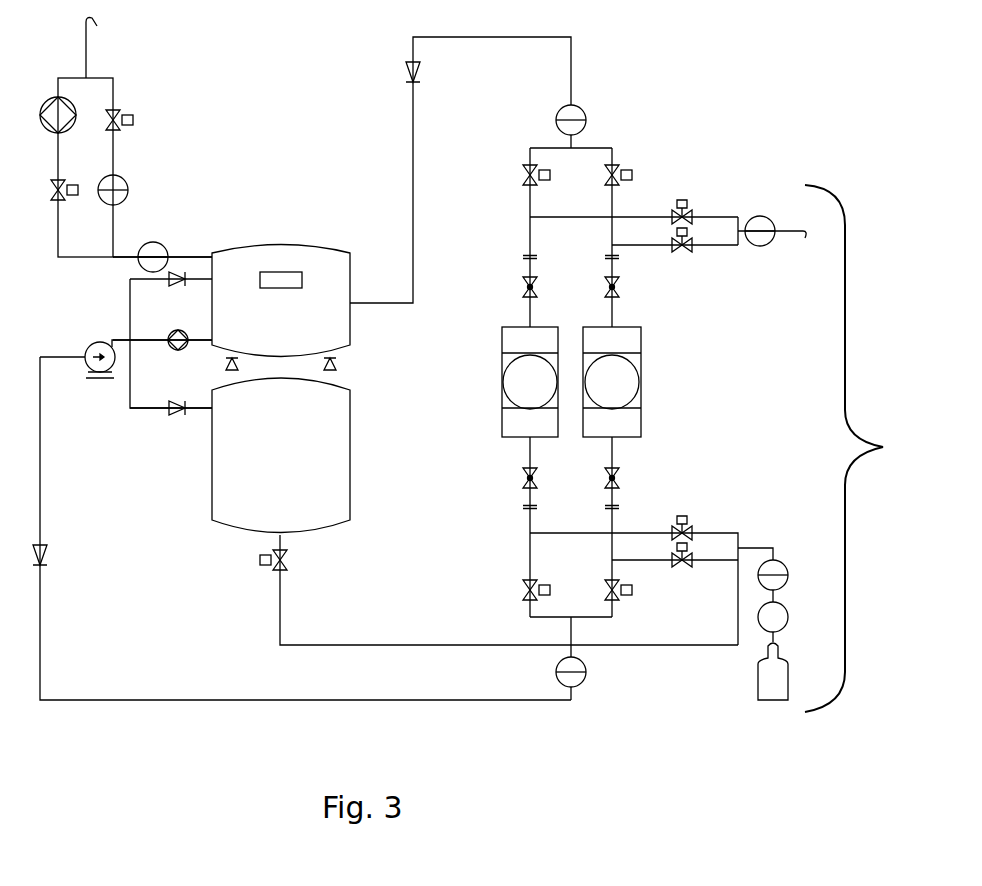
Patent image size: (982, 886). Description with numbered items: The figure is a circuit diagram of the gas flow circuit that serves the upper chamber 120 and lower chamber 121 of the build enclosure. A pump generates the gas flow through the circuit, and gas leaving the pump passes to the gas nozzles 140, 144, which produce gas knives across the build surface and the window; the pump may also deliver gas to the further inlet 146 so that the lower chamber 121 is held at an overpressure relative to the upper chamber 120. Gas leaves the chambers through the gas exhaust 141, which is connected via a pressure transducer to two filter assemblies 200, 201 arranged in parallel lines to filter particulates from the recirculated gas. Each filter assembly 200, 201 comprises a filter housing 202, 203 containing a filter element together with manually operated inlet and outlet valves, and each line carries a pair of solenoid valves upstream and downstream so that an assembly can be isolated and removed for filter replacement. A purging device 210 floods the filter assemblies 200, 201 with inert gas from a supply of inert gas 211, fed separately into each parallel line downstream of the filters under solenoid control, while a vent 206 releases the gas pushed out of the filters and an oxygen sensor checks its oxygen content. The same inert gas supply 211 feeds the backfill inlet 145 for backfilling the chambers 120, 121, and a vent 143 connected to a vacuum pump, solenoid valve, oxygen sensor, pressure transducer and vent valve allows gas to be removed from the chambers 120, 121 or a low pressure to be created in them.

The upper chamber 120 is at (281, 308).
The lower chamber 121 is at (281, 455).
The gas nozzle 140 is at (206, 331).
The gas exhaust 141 is at (349, 298).
The vent 143 is at (209, 256).
The gas nozzle 144 is at (268, 269).
The backfill inlet 145 is at (290, 538).
The further inlet 146 is at (206, 417).
The filter assembly 200 is at (483, 394).
The filter assembly 201 is at (666, 396).
The filter housing 202 is at (474, 382).
The filter housing 203 is at (668, 381).
The vent 206 is at (798, 224).
The purging device 210 is at (870, 448).
The supply of inert gas 211 is at (762, 702).